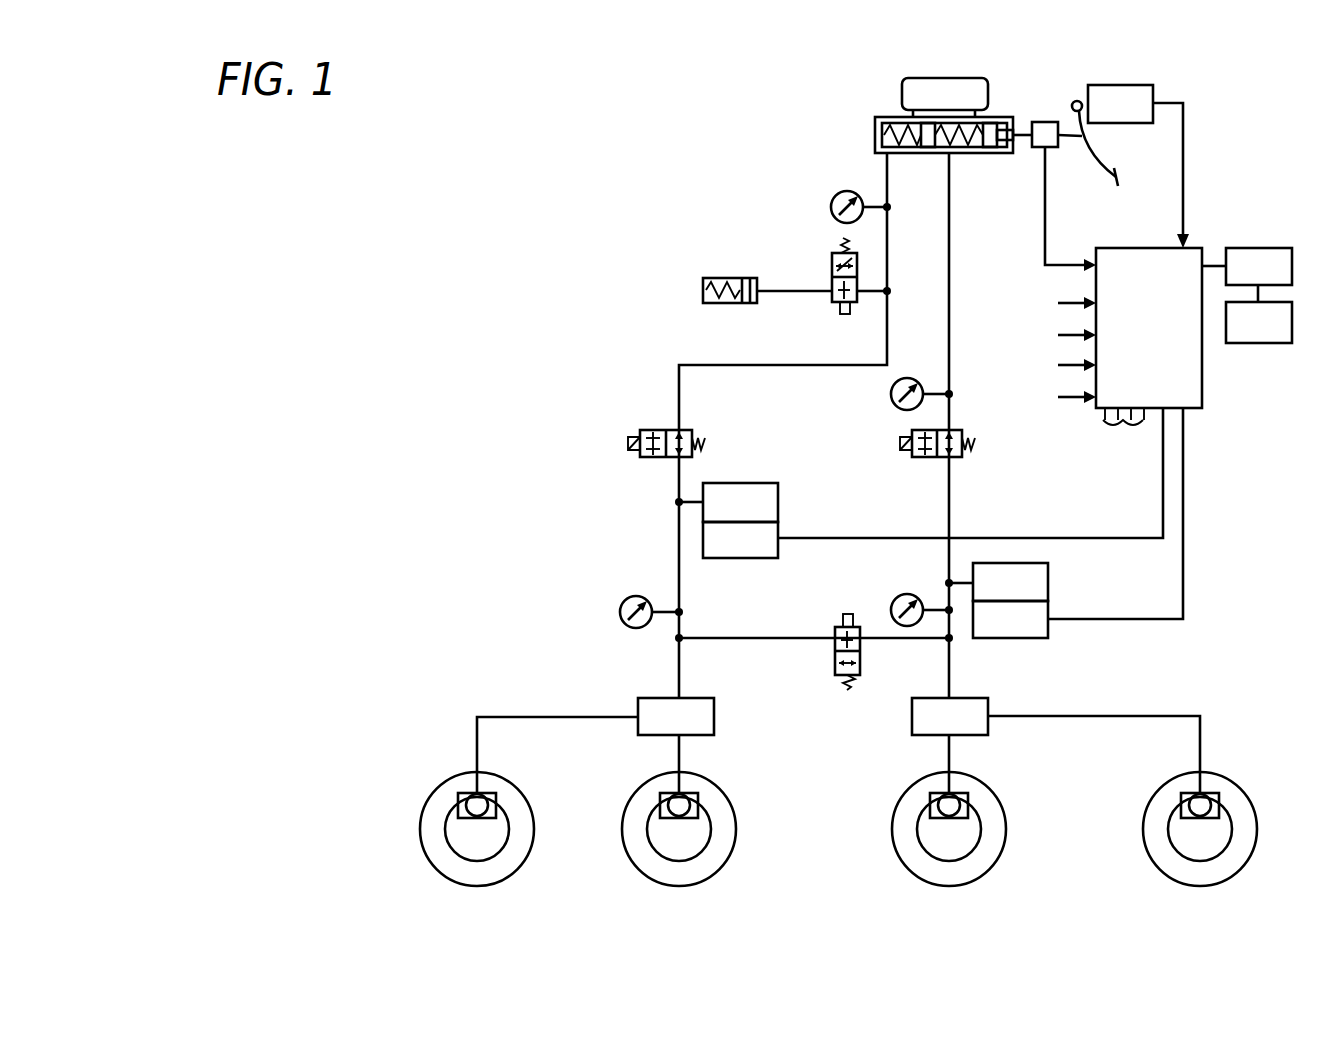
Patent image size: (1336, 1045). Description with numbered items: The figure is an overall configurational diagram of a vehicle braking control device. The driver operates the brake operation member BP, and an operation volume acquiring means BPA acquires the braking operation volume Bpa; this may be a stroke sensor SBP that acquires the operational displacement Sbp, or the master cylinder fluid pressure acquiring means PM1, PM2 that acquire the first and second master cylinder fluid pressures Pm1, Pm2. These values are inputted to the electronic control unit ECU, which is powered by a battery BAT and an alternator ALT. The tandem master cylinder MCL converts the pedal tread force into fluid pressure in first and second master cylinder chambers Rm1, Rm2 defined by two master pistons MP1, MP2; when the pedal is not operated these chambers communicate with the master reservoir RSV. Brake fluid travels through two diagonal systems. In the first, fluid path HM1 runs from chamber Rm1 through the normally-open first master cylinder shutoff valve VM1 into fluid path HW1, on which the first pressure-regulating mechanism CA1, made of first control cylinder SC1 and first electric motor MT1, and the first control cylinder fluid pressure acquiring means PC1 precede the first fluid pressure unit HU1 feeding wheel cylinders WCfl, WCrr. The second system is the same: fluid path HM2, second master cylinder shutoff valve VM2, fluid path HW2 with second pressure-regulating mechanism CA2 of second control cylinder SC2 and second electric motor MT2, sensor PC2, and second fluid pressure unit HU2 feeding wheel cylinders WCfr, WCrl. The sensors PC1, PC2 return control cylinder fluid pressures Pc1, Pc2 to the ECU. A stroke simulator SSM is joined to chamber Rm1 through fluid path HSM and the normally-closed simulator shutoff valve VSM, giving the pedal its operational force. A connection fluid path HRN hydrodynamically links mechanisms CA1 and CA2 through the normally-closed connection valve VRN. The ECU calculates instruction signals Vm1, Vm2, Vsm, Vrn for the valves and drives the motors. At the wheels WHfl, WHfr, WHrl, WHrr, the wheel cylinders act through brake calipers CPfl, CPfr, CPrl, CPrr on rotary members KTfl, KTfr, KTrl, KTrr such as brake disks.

The tandem master cylinder MCL is at (1005, 117).
The master reservoir RSV is at (945, 97).
The first master cylinder chamber Rm1 is at (875, 135).
The second master cylinder chamber Rm2 is at (965, 153).
The master piston MP1 is at (927, 153).
The master piston MP2 is at (990, 153).
The operation displacement acquiring means SBP is at (1048, 122).
The brake operation member BP is at (1110, 146).
The operation volume acquiring means BPA is at (1120, 104).
The braking operation volume Bpa is at (1196, 175).
The operational displacement Sbp is at (1070, 209).
The electronic control unit ECU is at (1149, 336).
The rechargeable battery BAT is at (1247, 266).
The generator ALT is at (1259, 314).
The first master cylinder fluid pressure Pm1 is at (1049, 301).
The second master cylinder fluid pressure Pm2 is at (1049, 333).
The first control cylinder fluid pressure Pc1 is at (1053, 363).
The second control cylinder fluid pressure Pc2 is at (1053, 394).
The instruction signal for simulator shutoff valve Vsm is at (1122, 438).
The instruction signal for first master cylinder shutoff valve Vm1 is at (1122, 467).
The instruction signal for second master cylinder shutoff valve Vm2 is at (1122, 495).
The instruction signal for connection valve Vrn is at (1126, 517).
The first master cylinder fluid pressure acquiring means PM1 is at (828, 207).
The second master cylinder fluid pressure acquiring means PM2 is at (891, 394).
The first control cylinder fluid pressure acquiring means PC1 is at (646, 597).
The second control cylinder fluid pressure acquiring means PC2 is at (916, 596).
The stroke simulator SSM is at (717, 278).
The fluid path HSM is at (792, 289).
The simulator shutoff valve VSM is at (851, 292).
The fluid path HM1 is at (720, 366).
The fluid path HM2 is at (949, 246).
The first master cylinder shutoff valve VM1 is at (635, 445).
The second master cylinder shutoff valve VM2 is at (906, 445).
The first pressure-regulating mechanism CA1 is at (921, 483).
The second pressure-regulating mechanism CA2 is at (1066, 523).
The first control cylinder SC1 is at (728, 502).
The second control cylinder SC2 is at (998, 582).
The first electric motor MT1 is at (818, 490).
The second electric motor MT2 is at (1092, 572).
The connection fluid path HRN is at (751, 638).
The connection valve VRN is at (844, 636).
The fluid path HW1 is at (679, 672).
The fluid path HW2 is at (949, 672).
The first fluid pressure unit HU1 is at (676, 716).
The second fluid pressure unit HU2 is at (950, 716).
The wheel cylinder WCrr is at (481, 793).
The wheel cylinder WCfl is at (686, 793).
The wheel cylinder WCfr is at (953, 793).
The wheel cylinder WCrl is at (1208, 793).
The brake caliper CPrr is at (496, 805).
The brake caliper CPfl is at (701, 805).
The brake caliper CPfr is at (966, 805).
The brake caliper CPrl is at (1224, 805).
The rotary member KTrr is at (477, 829).
The rotary member KTfl is at (679, 829).
The rotary member KTfr is at (949, 829).
The rotary member KTrl is at (1200, 829).
The wheel WHrr is at (474, 886).
The wheel WHfl is at (676, 886).
The wheel WHfr is at (946, 886).
The wheel WHrl is at (1197, 886).